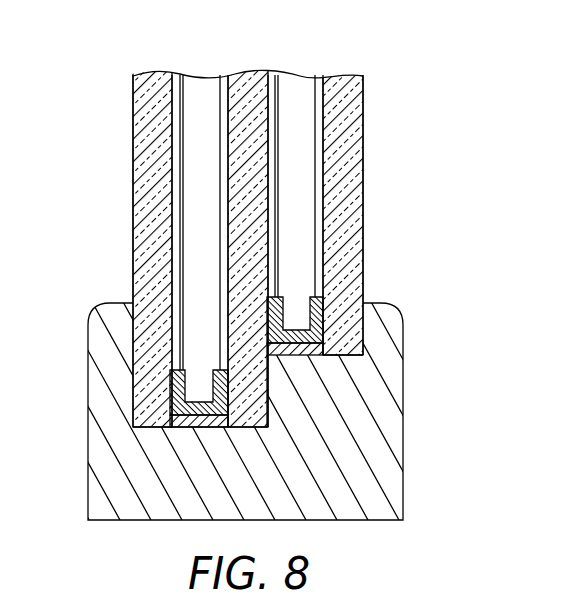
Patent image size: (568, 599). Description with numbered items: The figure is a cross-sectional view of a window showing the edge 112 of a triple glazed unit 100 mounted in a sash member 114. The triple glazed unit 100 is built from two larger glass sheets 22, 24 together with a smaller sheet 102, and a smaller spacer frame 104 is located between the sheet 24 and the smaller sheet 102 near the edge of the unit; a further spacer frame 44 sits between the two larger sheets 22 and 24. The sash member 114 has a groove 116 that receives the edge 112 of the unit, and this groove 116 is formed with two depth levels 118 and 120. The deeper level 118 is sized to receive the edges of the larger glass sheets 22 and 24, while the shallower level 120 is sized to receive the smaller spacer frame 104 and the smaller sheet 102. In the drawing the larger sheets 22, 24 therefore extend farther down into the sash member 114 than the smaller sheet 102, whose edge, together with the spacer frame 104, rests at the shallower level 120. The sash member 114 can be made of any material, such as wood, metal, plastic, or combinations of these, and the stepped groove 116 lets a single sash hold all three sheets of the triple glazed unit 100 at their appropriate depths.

The glass sheet 22 is at (152, 75).
The glass sheet 24 is at (250, 76).
The smaller sheet 102 is at (340, 76).
The triple glazed unit 100 is at (409, 125).
The spacer frame 104 is at (308, 297).
The groove 116 is at (131, 303).
The U-shaped clip 44 is at (187, 380).
The shallower level 120 is at (345, 378).
The sash member 114 is at (403, 431).
The deeper level 118 is at (153, 428).
The edge 112 is at (242, 428).